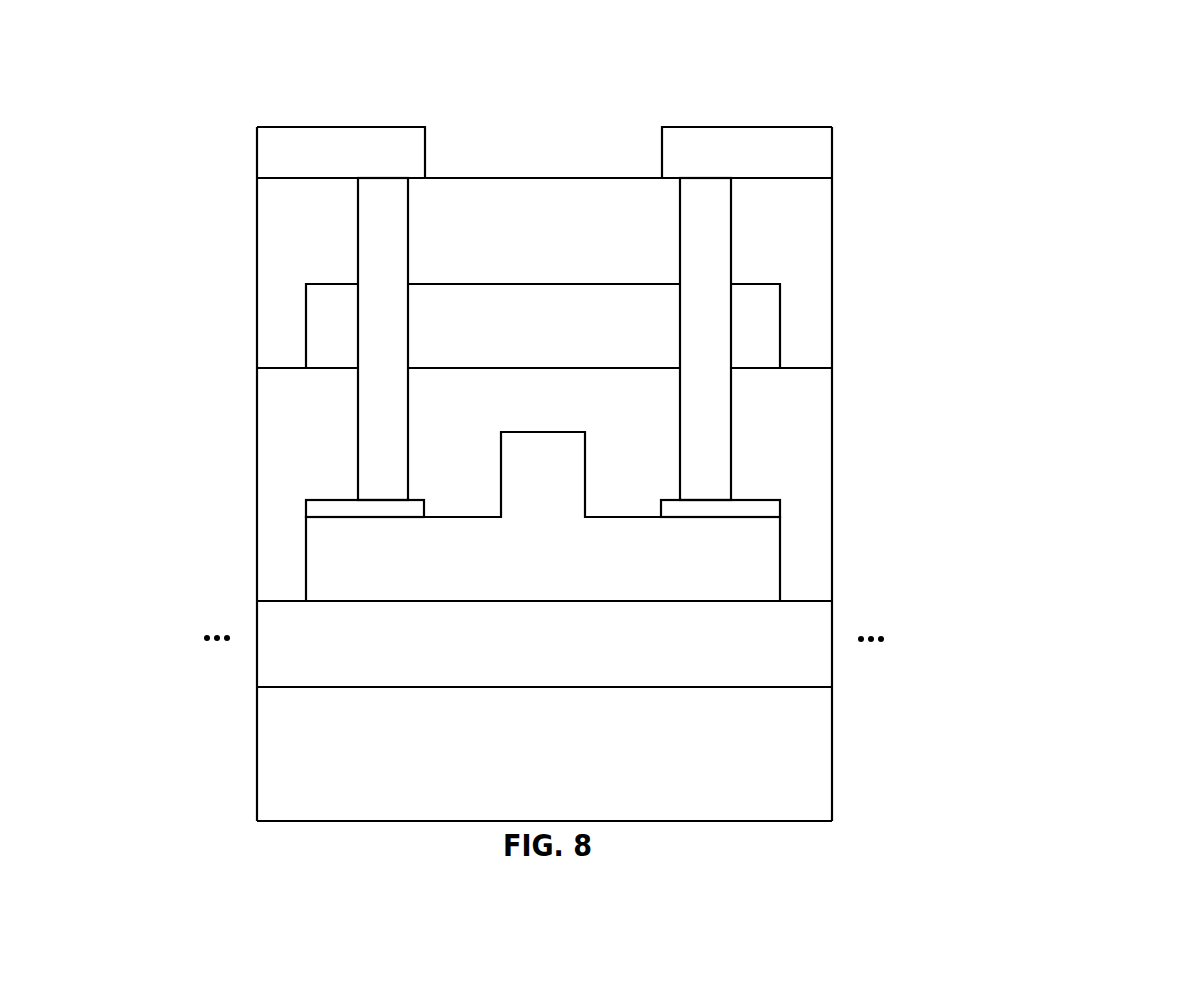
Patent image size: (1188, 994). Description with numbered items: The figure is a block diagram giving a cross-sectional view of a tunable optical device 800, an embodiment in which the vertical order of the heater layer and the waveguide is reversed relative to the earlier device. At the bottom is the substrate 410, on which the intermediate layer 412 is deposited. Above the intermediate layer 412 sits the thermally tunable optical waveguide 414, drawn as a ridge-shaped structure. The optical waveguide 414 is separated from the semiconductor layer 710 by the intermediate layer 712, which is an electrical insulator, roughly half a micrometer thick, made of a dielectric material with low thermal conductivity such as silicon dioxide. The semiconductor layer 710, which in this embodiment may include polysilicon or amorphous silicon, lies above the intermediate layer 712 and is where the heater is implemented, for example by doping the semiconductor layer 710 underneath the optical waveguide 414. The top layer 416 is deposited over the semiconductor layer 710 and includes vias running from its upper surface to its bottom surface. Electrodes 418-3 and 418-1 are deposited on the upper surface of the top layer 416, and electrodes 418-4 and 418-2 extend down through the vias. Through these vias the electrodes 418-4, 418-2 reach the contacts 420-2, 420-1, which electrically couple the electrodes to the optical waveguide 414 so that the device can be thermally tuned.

The tunable optical device 800 is at (1028, 115).
The substrate 410 is at (557, 774).
The intermediate layer 412 is at (557, 665).
The intermediate layer 712 is at (543, 393).
The thermally tunable optical waveguide 414 is at (643, 572).
The top layer 416 is at (562, 258).
The semiconductor layer 710 is at (556, 347).
The electrode 418-1 is at (730, 143).
The electrode 418-2 is at (703, 233).
The electrode 418-3 is at (357, 143).
The electrode 418-4 is at (390, 233).
The contact 420-1 is at (700, 508).
The contact 420-2 is at (390, 508).